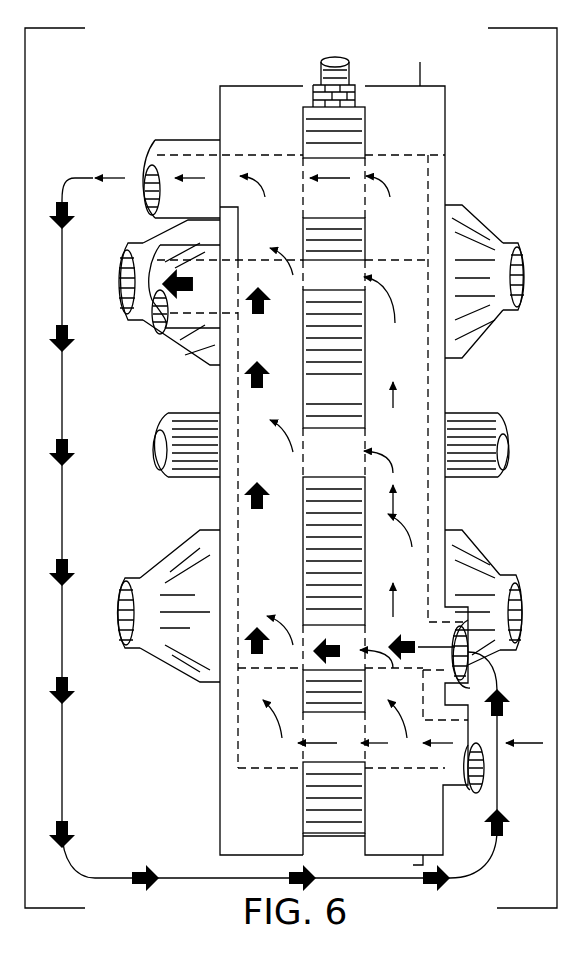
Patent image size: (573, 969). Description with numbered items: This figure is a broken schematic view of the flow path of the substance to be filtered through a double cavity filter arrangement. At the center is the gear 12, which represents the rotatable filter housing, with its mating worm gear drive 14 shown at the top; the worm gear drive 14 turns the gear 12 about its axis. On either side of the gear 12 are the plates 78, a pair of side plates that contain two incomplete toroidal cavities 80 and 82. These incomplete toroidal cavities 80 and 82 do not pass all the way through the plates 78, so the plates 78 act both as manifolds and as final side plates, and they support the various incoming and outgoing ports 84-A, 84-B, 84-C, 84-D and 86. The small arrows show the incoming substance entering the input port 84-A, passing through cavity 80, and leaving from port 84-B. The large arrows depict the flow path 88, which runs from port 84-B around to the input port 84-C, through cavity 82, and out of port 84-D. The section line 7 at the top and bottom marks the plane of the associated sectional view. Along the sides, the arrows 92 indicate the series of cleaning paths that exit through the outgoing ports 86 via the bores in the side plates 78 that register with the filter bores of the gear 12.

The section line 7- 7 is at (420, 62).
The gear 12 is at (334, 471).
The worm gear drive 14 is at (322, 70).
The plates 78 is at (220, 812).
The incomplete toroidal cavity 80 is at (352, 470).
The incomplete toroidal cavity 82 is at (312, 461).
The input port 84-A is at (485, 766).
The port 84-B is at (178, 152).
The input port 84-C is at (466, 660).
The port 84-D is at (165, 318).
The outgoing ports 86 is at (190, 340).
The flow path 88 is at (62, 198).
The cleaning paths 92 is at (112, 283).